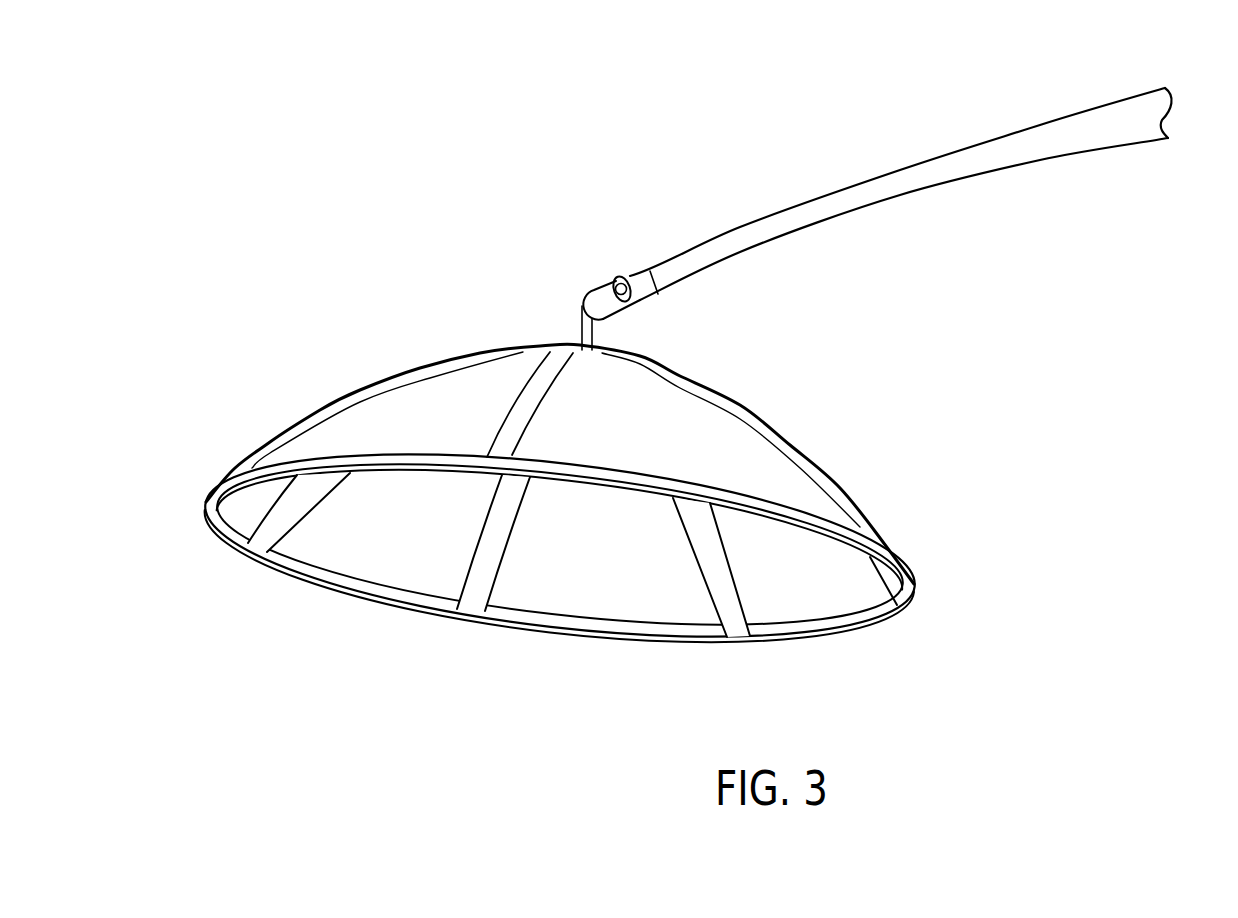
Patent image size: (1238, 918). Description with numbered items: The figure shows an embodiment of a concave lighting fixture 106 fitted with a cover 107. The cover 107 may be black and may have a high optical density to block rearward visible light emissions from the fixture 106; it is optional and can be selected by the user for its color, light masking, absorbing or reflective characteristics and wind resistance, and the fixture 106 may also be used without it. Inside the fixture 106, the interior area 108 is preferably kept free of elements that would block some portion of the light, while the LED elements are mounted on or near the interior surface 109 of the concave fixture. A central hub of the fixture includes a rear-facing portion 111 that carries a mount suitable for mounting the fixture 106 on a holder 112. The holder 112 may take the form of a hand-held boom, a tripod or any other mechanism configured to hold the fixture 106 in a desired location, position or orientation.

The fixture 106 is at (309, 195).
The cover 107 is at (495, 375).
The interior area 108 is at (346, 612).
The interior surface 109 is at (638, 604).
The rear-facing portion 111 is at (602, 298).
The holder 112 is at (777, 222).